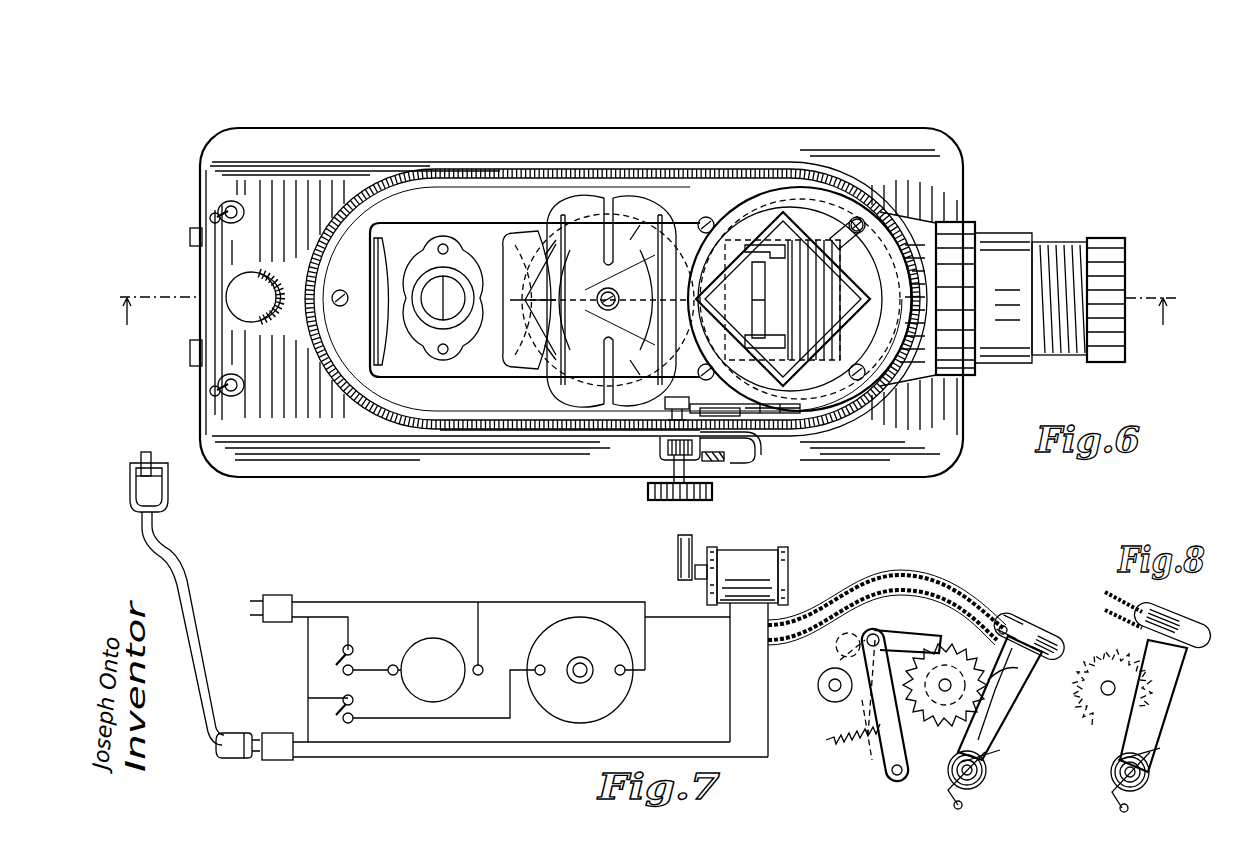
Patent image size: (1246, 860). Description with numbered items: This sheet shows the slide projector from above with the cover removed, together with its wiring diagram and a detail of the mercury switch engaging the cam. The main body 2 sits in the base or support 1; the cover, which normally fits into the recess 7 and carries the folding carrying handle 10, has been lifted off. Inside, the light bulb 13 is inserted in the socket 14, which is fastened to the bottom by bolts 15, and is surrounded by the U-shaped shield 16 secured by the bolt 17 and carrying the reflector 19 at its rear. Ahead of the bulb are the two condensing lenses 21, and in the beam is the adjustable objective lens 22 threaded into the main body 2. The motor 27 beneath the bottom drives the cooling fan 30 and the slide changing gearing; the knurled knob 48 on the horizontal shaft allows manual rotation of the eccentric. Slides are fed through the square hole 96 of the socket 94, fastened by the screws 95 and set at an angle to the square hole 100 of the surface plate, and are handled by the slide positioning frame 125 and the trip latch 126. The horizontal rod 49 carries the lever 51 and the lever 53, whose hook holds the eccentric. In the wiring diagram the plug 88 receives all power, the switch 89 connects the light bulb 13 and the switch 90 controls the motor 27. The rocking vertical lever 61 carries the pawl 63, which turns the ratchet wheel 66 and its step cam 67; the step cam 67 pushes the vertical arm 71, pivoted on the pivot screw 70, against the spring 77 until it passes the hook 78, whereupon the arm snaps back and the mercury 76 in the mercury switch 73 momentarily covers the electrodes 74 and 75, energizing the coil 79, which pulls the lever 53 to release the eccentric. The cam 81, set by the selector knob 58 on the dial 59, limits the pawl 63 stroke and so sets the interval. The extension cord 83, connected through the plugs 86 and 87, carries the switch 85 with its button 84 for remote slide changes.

In FIG. 6, the base or support 1 is at (395, 128).
In FIG. 6, the main body 2 is at (515, 170).
In FIG. 6, the recess 7 is at (495, 427).
In FIG. 6, the folding carrying handle 10 is at (647, 324).
In FIG. 6, the light bulb 13 is at (455, 282).
In FIG. 7, the light bulb 13 is at (440, 652).
In FIG. 6, the socket 14 is at (462, 333).
In FIG. 6, the bolts 15 is at (445, 356).
In FIG. 6, the shield 16 is at (493, 222).
In FIG. 6, the bolt 17 is at (340, 290).
In FIG. 6, the reflector 19 is at (383, 262).
In FIG. 6, the condensing lenses 21 is at (632, 318).
In FIG. 6, the adjustable objective lens 22 is at (1062, 242).
In FIG. 7, the motor 27 is at (586, 670).
In FIG. 6, the cooling fan 30 is at (550, 216).
In FIG. 6, the knurled knob 48 is at (648, 492).
In FIG. 7, the horizontal rod 49 is at (885, 783).
In FIG. 6, the lever 51 is at (750, 460).
In FIG. 7, the lever 53 is at (678, 568).
In FIG. 6, the selector knob 58 is at (664, 452).
In FIG. 6, the dial 59 is at (660, 440).
In FIG. 7, the vertical lever 61 is at (872, 740).
In FIG. 7, the pawl 63 is at (918, 632).
In FIG. 7, the ratchet wheel 66 is at (950, 650).
In FIG. 7, the step cam 67 is at (1015, 690).
In FIG. 8, the step cam 67 is at (1150, 712).
In FIG. 7, the pivot screw 70 is at (972, 775).
In FIG. 8, the pivot screw 70 is at (1138, 772).
In FIG. 7, the vertical arm 71 is at (1005, 735).
In FIG. 8, the vertical arm 71 is at (1165, 735).
In FIG. 7, the mercury switch 73 is at (1058, 640).
In FIG. 8, the mercury switch 73 is at (1195, 632).
In FIG. 7, the electrode 74 is at (1010, 620).
In FIG. 8, the electrode 74 is at (1148, 612).
In FIG. 7, the electrode 75 is at (997, 636).
In FIG. 8, the electrode 75 is at (1140, 635).
In FIG. 7, the mercury 76 is at (1040, 640).
In FIG. 8, the mercury 76 is at (1178, 625).
In FIG. 7, the spring 77 is at (955, 798).
In FIG. 8, the spring 77 is at (1140, 805).
In FIG. 7, the hook 78 is at (995, 710).
In FIG. 8, the hook 78 is at (1160, 688).
In FIG. 7, the coil 79 is at (748, 555).
In FIG. 6, the cam 81 is at (665, 405).
In FIG. 7, the cam 81 is at (818, 688).
In FIG. 7, the extension cord 83 is at (180, 582).
In FIG. 7, the button 84 is at (146, 452).
In FIG. 7, the switch 85 is at (170, 480).
In FIG. 7, the plug 86 is at (232, 760).
In FIG. 6, the plug 87 is at (194, 352).
In FIG. 7, the plug 87 is at (280, 760).
In FIG. 6, the plug 88 is at (198, 232).
In FIG. 7, the plug 88 is at (282, 596).
In FIG. 6, the switch 89 is at (228, 203).
In FIG. 7, the switch 89 is at (355, 653).
In FIG. 6, the switch 90 is at (225, 392).
In FIG. 7, the switch 90 is at (354, 708).
In FIG. 6, the socket 94 is at (842, 225).
In FIG. 6, the screws 95 is at (705, 220).
In FIG. 6, the square hole 96 is at (770, 225).
In FIG. 6, the square hole 100 is at (790, 232).
In FIG. 6, the slide positioning frame 125 is at (775, 300).
In FIG. 6, the trip latch 126 is at (760, 262).